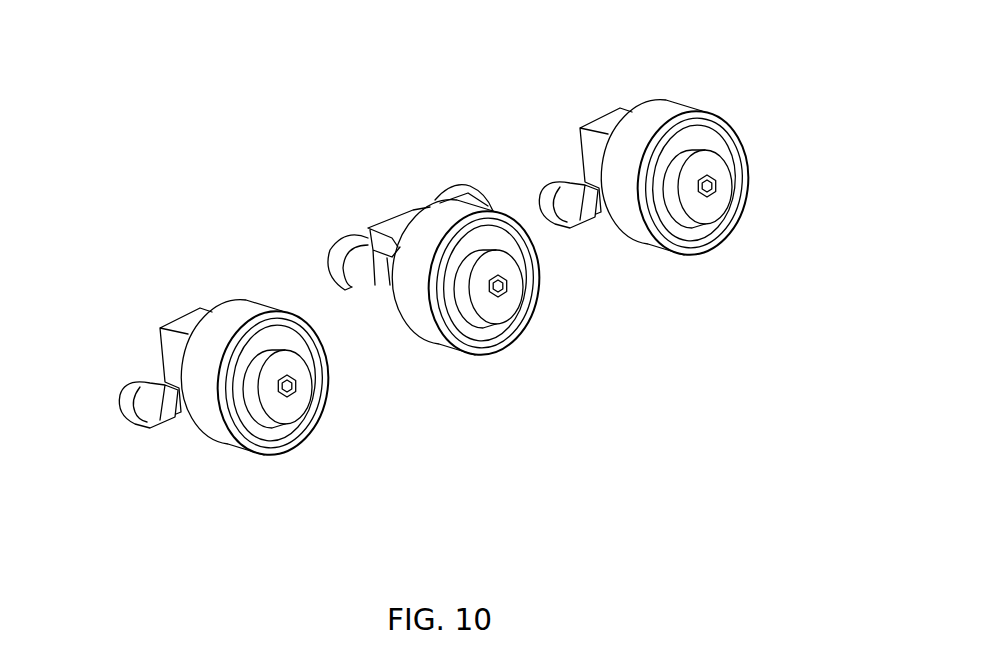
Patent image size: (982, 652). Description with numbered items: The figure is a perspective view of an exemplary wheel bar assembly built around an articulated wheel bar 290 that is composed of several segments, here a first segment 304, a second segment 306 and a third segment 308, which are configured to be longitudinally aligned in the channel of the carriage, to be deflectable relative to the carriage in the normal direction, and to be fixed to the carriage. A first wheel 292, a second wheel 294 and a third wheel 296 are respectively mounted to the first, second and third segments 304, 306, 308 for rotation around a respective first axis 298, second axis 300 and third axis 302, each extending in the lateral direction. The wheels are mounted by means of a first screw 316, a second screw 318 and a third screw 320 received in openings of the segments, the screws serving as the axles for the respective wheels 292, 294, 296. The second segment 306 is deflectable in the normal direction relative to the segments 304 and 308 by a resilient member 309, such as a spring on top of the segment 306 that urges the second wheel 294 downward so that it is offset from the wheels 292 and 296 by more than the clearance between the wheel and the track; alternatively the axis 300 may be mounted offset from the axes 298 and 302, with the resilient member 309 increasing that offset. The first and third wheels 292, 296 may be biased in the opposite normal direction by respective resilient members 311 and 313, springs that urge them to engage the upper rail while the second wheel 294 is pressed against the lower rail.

The articulated wheel bar 290 is at (183, 230).
The first wheel 292 is at (242, 448).
The second wheel 294 is at (457, 352).
The third wheel 296 is at (670, 252).
The first axis 298 is at (297, 392).
The second axis 300 is at (507, 293).
The third axis 302 is at (715, 192).
The first segment 304 is at (190, 320).
The second segment 306 is at (382, 277).
The third segment 308 is at (610, 120).
The resilient member 309 is at (343, 240).
The resilient member 311 is at (123, 417).
The resilient member 313 is at (548, 195).
The first screw 316 is at (282, 407).
The second screw 318 is at (498, 310).
The third screw 320 is at (703, 212).